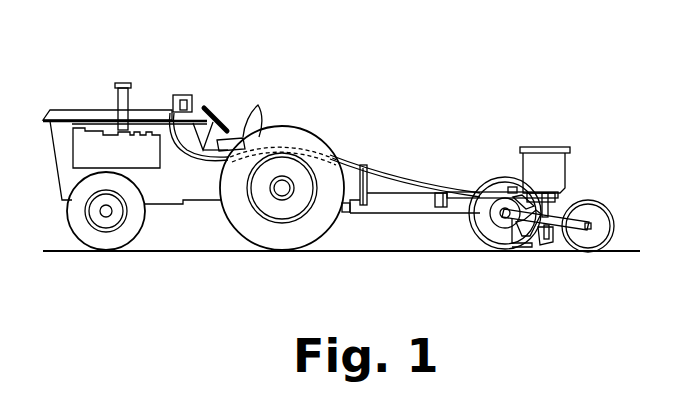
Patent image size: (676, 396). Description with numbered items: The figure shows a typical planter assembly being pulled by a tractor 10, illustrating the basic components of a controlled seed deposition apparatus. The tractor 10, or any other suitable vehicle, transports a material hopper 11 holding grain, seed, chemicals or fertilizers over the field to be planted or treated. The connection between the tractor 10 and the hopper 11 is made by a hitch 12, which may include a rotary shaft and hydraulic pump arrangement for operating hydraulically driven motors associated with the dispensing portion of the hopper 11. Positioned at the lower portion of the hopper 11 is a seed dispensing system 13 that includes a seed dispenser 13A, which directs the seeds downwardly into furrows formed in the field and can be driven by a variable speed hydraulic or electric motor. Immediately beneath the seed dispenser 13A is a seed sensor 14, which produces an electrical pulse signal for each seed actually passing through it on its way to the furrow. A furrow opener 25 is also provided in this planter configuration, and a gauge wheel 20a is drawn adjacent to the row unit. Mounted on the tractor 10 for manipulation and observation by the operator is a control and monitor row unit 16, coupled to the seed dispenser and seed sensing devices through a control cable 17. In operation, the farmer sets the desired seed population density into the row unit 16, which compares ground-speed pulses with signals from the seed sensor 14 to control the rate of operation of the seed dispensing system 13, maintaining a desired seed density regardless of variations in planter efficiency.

The tractor 10 is at (147, 118).
The control and monitor row unit 16 is at (189, 95).
The control cable 17 is at (356, 161).
The hitch 12 is at (391, 204).
The furrow opener 25 is at (478, 191).
The hopper 11 is at (527, 170).
The seed dispensing system 13 is at (586, 171).
The seed dispenser 13A is at (576, 194).
The gauge wheel 20a is at (480, 225).
The seed sensor 14 is at (548, 231).